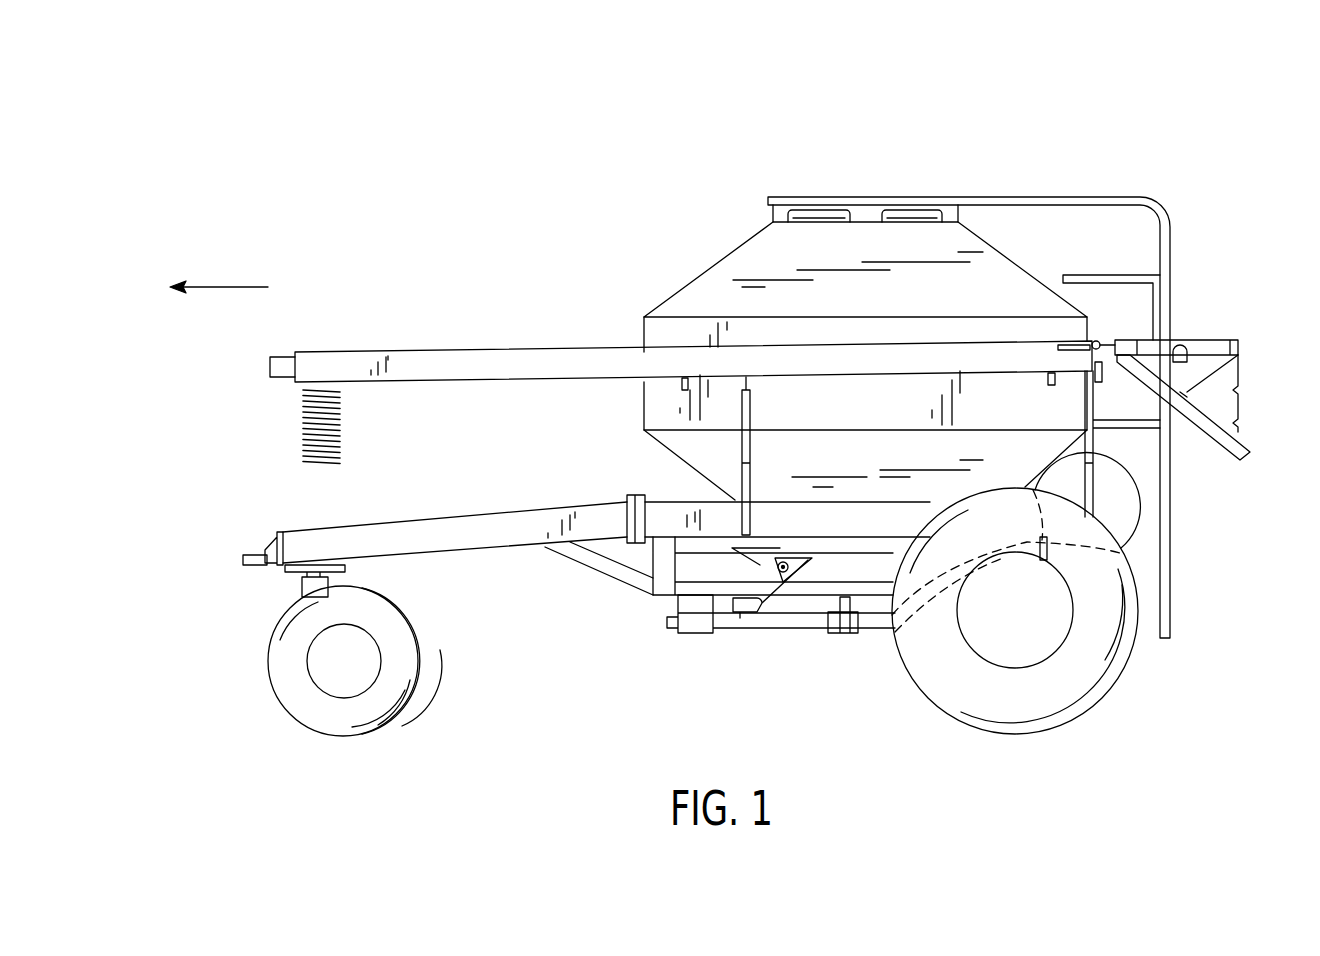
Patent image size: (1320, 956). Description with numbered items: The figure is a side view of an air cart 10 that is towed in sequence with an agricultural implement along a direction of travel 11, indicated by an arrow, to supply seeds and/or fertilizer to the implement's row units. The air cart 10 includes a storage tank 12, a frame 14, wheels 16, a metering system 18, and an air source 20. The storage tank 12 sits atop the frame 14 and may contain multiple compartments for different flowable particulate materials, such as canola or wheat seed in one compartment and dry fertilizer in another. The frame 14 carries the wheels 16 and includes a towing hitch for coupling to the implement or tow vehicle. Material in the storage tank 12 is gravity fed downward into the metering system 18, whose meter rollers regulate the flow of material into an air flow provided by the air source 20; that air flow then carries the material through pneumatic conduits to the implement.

The air cart 10 is at (710, 157).
The direction of travel 11 is at (226, 287).
The storage tank 12 is at (748, 254).
The frame 14 is at (449, 514).
The wheels 16 is at (292, 713).
The metering system 18 is at (808, 580).
The air source 20 is at (1117, 490).